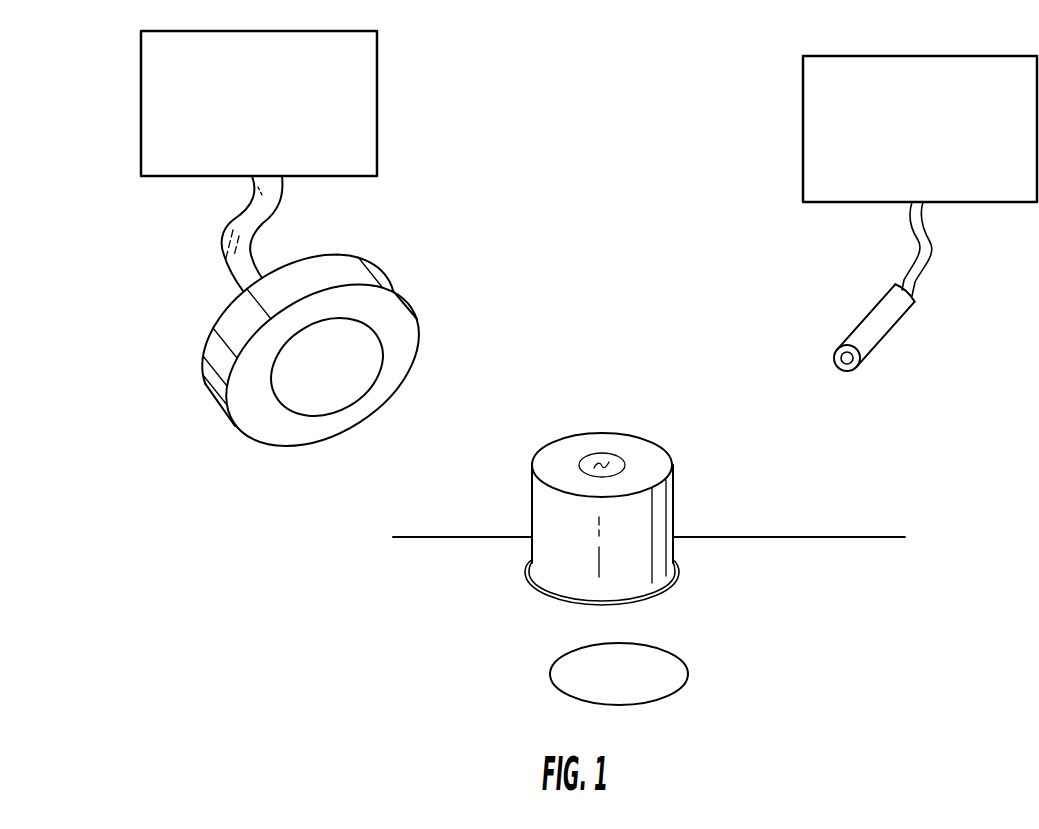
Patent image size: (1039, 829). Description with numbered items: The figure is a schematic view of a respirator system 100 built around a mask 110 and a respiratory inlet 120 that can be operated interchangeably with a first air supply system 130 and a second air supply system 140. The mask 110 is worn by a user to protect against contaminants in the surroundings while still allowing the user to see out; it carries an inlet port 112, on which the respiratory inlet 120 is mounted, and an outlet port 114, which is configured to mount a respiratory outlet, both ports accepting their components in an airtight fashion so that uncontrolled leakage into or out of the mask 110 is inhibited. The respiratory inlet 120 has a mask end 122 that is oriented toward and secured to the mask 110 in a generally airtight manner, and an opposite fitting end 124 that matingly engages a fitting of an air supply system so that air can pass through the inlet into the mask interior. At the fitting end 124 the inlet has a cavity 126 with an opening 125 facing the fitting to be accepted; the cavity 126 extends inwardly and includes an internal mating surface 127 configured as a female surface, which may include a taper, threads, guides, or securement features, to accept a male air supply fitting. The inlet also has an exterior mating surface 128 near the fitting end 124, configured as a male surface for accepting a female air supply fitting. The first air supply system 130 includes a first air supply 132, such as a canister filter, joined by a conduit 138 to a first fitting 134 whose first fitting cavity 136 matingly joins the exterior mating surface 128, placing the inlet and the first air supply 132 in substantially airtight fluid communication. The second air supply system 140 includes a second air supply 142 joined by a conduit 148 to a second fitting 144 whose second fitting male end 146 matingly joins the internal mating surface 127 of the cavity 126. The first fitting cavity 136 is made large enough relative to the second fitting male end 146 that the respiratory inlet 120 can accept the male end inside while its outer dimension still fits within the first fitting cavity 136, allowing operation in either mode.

The respirator system 100 is at (318, 697).
The mask 110 is at (863, 537).
The inlet port 112 is at (675, 578).
The outlet port 114 is at (688, 670).
The respiratory inlet 120 is at (675, 494).
The mask end 122 is at (503, 597).
The fitting end 124 is at (483, 505).
The opening 125 is at (605, 456).
The cavity 126 is at (632, 457).
The internal mating surface 127 is at (598, 456).
The exterior mating surface 128 is at (582, 531).
The first air supply system 130 is at (484, 143).
The first air supply 132 is at (272, 103).
The first fitting 134 is at (215, 352).
The first fitting cavity 136 is at (318, 392).
The conduit 138 is at (282, 197).
The second air supply system 140 is at (739, 93).
The second air supply 142 is at (933, 128).
The second fitting 144 is at (900, 323).
The second fitting male end 146 is at (843, 373).
The conduit 148 is at (932, 255).